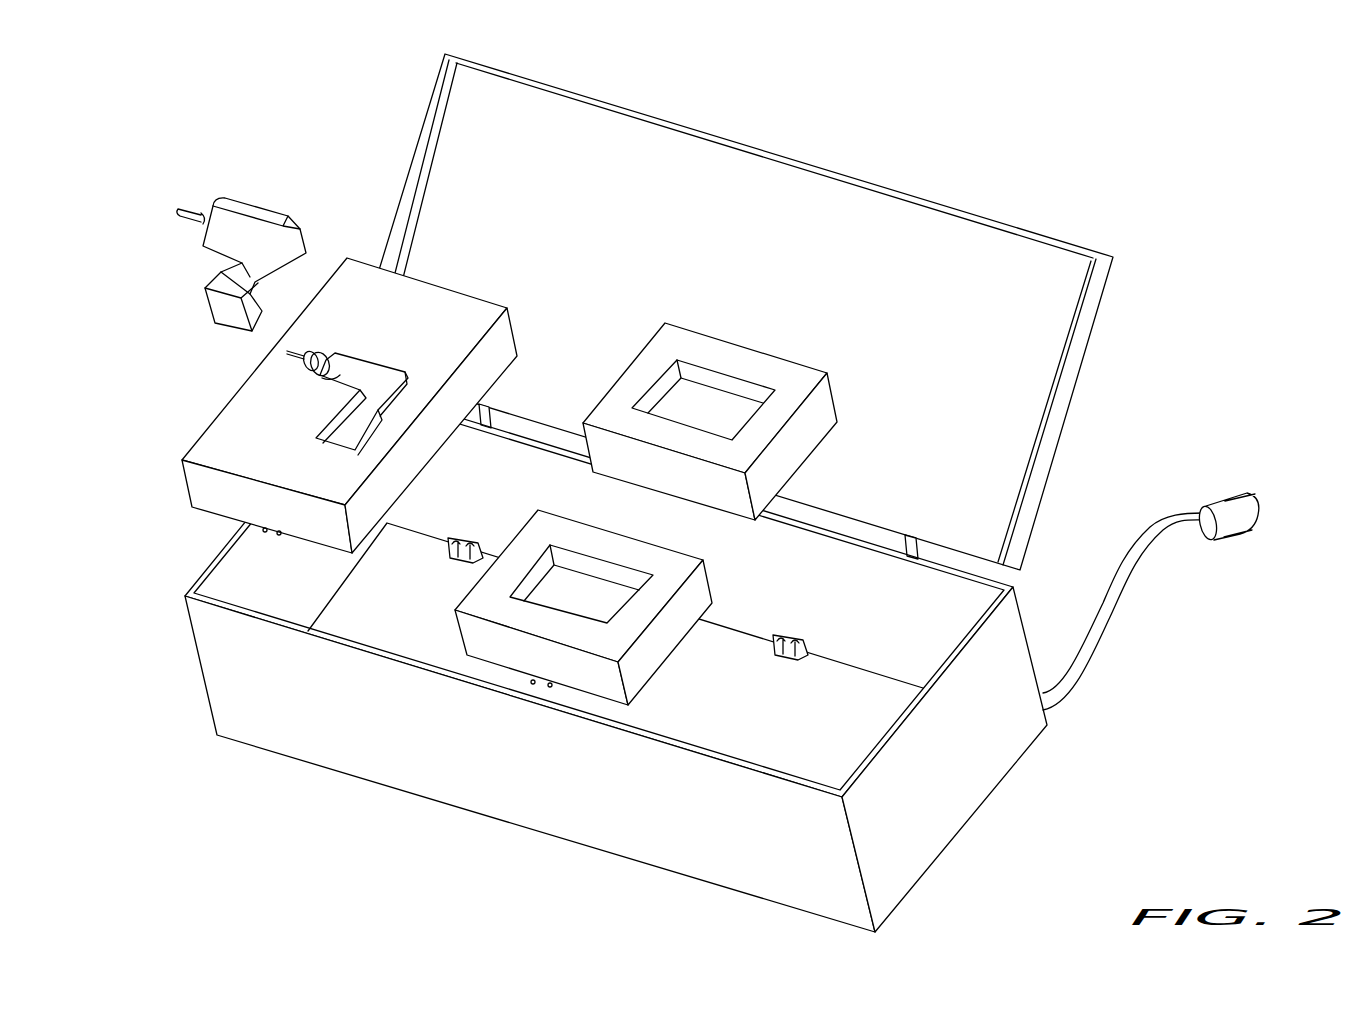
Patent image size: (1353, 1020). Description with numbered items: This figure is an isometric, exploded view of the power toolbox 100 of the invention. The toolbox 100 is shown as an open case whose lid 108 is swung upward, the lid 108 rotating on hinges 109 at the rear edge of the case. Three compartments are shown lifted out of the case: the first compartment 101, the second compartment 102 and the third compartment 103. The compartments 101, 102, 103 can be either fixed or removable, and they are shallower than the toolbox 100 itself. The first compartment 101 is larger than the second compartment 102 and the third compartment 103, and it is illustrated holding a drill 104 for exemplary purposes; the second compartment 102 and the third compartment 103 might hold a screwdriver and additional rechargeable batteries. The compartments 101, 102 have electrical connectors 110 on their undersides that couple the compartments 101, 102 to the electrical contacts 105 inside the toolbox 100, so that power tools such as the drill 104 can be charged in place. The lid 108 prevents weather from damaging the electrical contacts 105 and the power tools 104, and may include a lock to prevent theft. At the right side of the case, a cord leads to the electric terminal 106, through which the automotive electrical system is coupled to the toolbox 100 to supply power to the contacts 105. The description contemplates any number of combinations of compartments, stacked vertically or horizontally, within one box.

The power toolbox 100 is at (485, 785).
The first compartment 101 is at (455, 313).
The second compartment 102 is at (655, 648).
The third compartment 103 is at (812, 420).
The drill 104 is at (267, 220).
The electrical contacts 105 is at (797, 640).
The electric terminal 106 is at (1240, 533).
The lid 108 is at (1097, 302).
The hinges 109 is at (905, 546).
The electrical connectors 110 is at (262, 538).